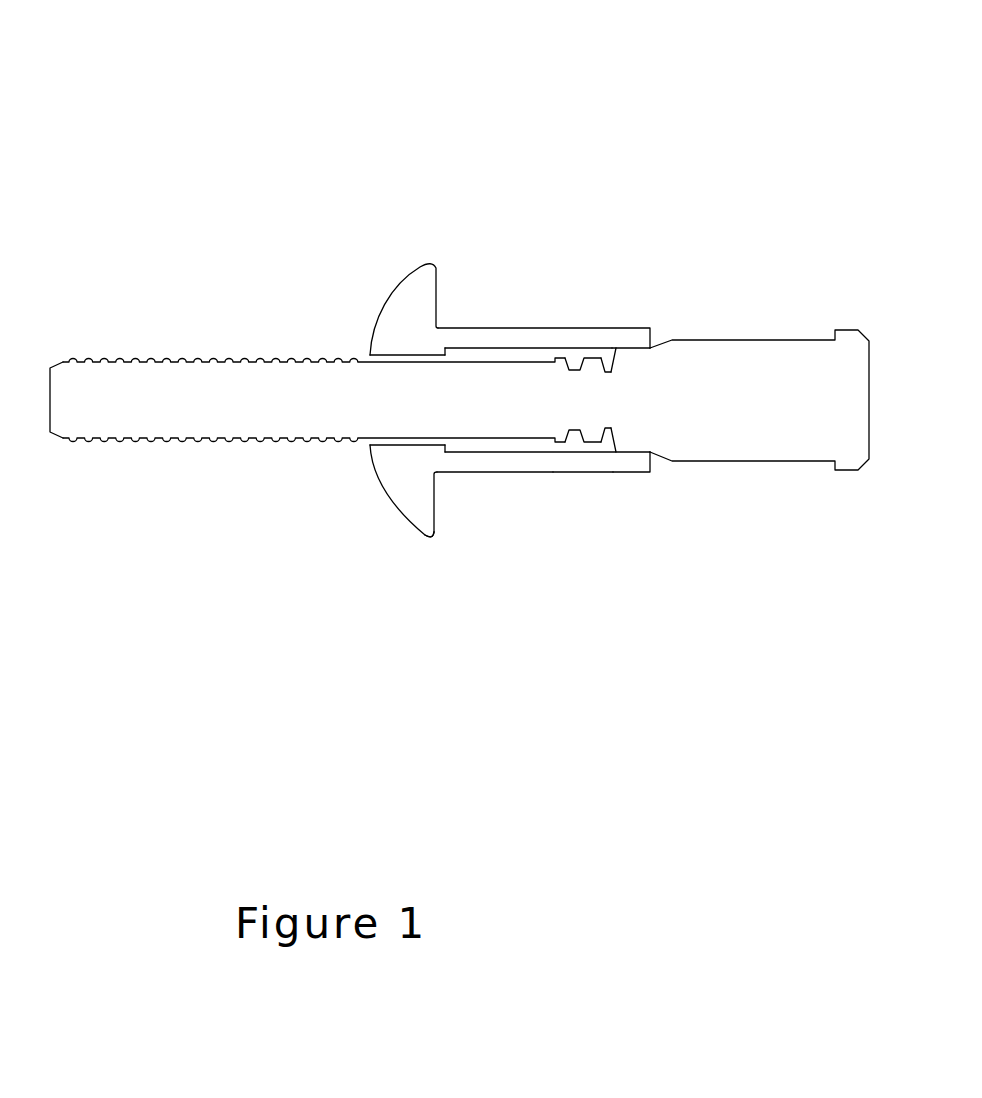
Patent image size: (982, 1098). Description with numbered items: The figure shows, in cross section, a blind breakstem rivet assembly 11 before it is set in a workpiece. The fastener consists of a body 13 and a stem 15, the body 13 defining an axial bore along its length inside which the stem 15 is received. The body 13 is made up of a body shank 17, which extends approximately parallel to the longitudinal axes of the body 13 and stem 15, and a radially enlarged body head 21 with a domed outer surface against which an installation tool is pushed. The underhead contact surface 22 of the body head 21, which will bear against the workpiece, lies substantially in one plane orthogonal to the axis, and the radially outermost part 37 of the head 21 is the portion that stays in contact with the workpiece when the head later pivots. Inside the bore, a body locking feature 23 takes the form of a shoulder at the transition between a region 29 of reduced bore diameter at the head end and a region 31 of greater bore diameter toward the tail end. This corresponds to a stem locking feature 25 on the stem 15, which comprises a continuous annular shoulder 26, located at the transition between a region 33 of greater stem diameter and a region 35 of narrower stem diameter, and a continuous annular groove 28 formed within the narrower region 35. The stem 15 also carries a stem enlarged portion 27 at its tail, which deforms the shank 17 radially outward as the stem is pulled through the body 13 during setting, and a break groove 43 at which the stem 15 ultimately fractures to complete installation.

The blind breakstem rivet assembly 11 is at (479, 60).
The body 13 is at (526, 597).
The stem 15 is at (180, 542).
The body shank 17 is at (535, 474).
The body head 21 is at (382, 482).
The underhead contact surface 22 is at (437, 513).
The body locking feature 23 is at (447, 448).
The stem locking feature 25 is at (607, 362).
The shoulder 26 is at (612, 347).
The stem enlarged portion 27 is at (741, 463).
The groove 28 is at (604, 366).
The region of reduced bore diameter 29 is at (450, 255).
The region of greater bore diameter 31 is at (645, 262).
The region of greater stem diameter 33 is at (658, 487).
The region of narrower stem diameter 35 is at (613, 487).
The radially outermost part of the head 37 is at (436, 534).
The break groove 43 is at (575, 370).